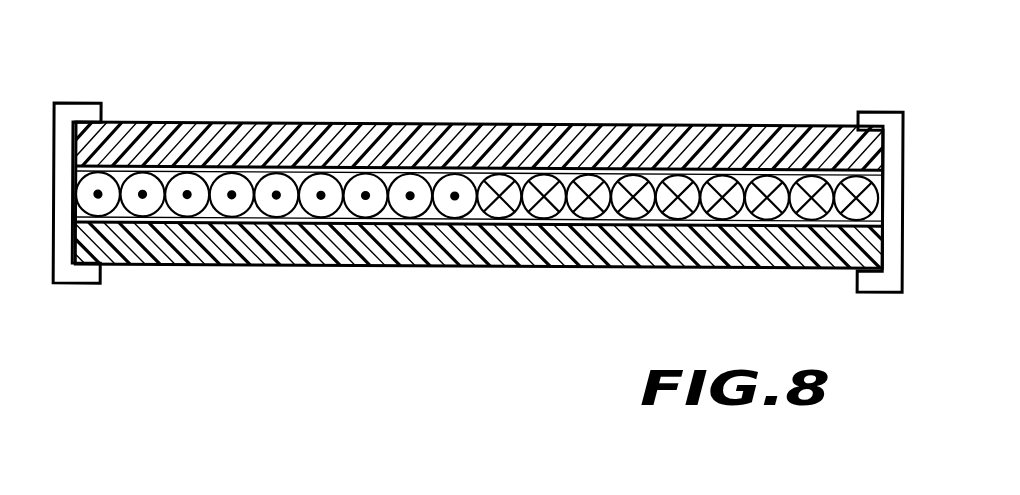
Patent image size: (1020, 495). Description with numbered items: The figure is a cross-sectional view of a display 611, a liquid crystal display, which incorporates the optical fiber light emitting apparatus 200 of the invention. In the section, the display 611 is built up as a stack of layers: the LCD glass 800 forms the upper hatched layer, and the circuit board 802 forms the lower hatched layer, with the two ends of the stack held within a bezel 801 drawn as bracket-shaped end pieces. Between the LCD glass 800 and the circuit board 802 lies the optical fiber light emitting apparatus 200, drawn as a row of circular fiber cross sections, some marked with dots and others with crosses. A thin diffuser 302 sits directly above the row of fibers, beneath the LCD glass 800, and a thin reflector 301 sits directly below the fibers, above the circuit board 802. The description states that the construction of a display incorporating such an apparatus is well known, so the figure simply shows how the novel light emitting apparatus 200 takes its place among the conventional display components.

The display 611 is at (477, 237).
The LCD glass 800 is at (477, 146).
The bezel 801 is at (880, 202).
The circuit board 802 is at (476, 245).
The diffuser 302 is at (479, 173).
The reflector 301 is at (479, 219).
The optical fiber light emitting apparatus 200 is at (477, 196).